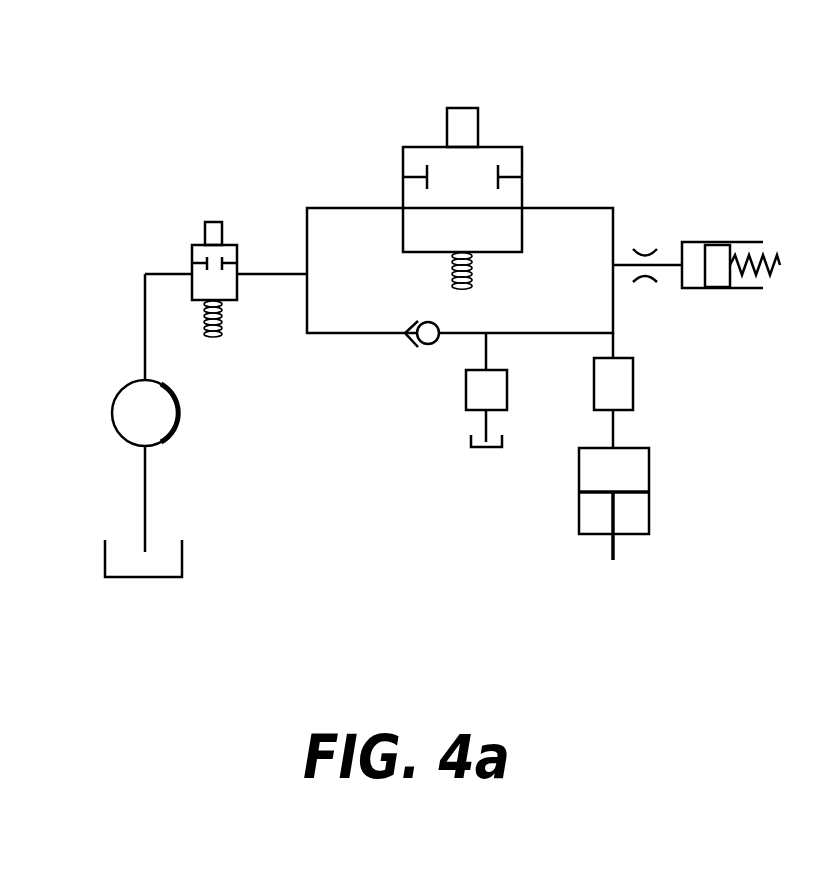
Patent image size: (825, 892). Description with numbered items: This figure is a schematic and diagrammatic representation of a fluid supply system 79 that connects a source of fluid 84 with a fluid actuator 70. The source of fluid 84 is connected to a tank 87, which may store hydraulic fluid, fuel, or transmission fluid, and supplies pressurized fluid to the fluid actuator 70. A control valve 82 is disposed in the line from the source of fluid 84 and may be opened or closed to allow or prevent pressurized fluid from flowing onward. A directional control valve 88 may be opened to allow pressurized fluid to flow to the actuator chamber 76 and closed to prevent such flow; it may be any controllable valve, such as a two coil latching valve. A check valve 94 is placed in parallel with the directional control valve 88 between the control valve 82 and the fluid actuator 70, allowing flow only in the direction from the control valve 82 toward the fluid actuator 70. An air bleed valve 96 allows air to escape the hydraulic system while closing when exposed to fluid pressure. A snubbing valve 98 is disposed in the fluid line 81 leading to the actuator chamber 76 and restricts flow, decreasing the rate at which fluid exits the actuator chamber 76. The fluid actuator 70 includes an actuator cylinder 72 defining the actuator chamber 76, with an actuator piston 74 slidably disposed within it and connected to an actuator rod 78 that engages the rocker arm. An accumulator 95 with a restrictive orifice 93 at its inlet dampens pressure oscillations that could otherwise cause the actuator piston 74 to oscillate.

The fluid actuator 70 is at (661, 452).
The actuator cylinder 72 is at (585, 521).
The actuator piston 74 is at (640, 492).
The actuator chamber 76 is at (585, 482).
The actuator rod 78 is at (617, 545).
The fluid supply system 79 is at (309, 170).
The fluid line 81 is at (613, 338).
The control valve 82 is at (177, 239).
The source of fluid 84 is at (180, 410).
The tank 87 is at (146, 577).
The directional control valve 88 is at (529, 171).
The restrictive orifice 93 is at (644, 253).
The check valve 94 is at (410, 347).
The accumulator 95 is at (722, 242).
The air bleed valve 96 is at (507, 390).
The snubbing valve 98 is at (633, 385).